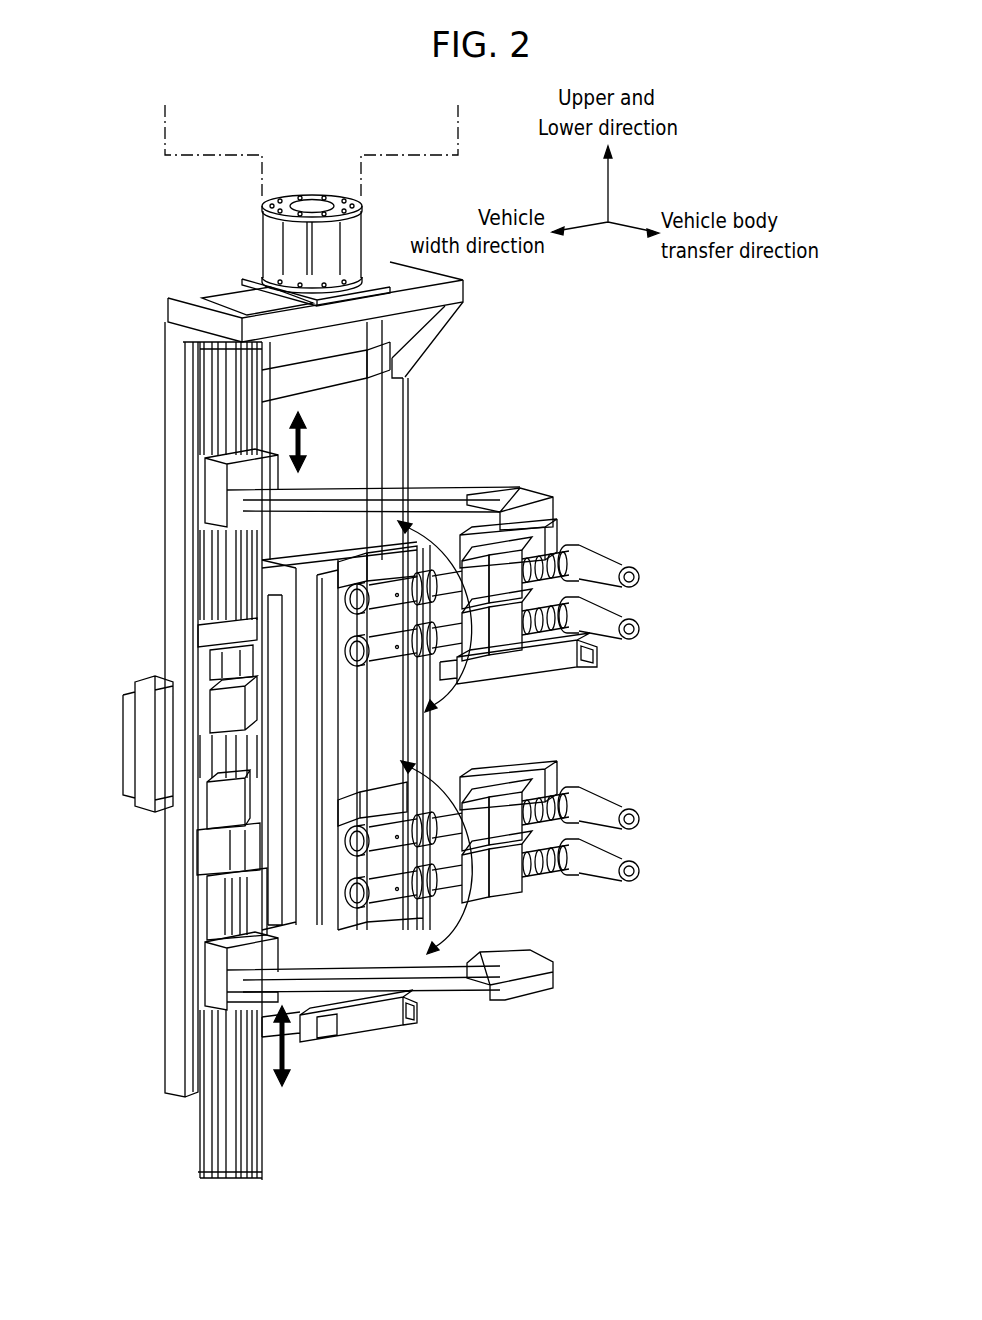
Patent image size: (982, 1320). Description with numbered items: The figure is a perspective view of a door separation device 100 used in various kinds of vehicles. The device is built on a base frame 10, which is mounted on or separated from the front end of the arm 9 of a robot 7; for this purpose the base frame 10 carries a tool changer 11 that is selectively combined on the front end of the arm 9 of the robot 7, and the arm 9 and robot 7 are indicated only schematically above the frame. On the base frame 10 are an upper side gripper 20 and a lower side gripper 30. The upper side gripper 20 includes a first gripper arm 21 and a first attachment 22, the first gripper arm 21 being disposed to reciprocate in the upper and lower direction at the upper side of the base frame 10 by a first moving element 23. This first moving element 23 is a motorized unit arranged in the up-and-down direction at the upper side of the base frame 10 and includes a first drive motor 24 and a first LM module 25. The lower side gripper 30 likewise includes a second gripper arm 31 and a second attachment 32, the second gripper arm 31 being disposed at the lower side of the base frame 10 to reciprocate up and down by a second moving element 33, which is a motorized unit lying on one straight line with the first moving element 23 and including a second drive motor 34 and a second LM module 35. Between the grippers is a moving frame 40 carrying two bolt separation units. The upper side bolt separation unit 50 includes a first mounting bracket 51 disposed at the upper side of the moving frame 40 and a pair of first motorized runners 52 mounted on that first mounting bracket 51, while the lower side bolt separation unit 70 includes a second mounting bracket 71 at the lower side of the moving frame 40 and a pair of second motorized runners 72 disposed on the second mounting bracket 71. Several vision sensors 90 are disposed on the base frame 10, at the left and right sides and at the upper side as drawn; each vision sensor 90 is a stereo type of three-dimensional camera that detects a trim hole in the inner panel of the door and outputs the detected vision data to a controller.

The door separation device 100 is at (116, 173).
The robot 7 is at (202, 170).
The arm 9 is at (368, 172).
The tool changer 11 is at (290, 224).
The base frame 10 is at (176, 504).
The first LM module 25 is at (232, 415).
The second LM module 35 is at (227, 1137).
The upper side gripper 20 is at (415, 458).
The first gripper arm 21 is at (433, 490).
The first attachment 22 is at (545, 516).
The first moving element 23 is at (168, 678).
The first drive motor 24 is at (212, 708).
The moving frame 40 is at (347, 785).
The upper side bolt separation unit 50 is at (519, 560).
The first mounting bracket 51 is at (548, 541).
The first motorized runner 52 is at (555, 540).
The lower side bolt separation unit 70 is at (496, 835).
The second mounting bracket 71 is at (545, 775).
The second motorized runner 72 is at (570, 882).
The vision sensor 90 is at (560, 671).
The second moving element 33 is at (180, 862).
The second drive motor 34 is at (210, 810).
The lower side gripper 30 is at (416, 1026).
The second gripper arm 31 is at (427, 975).
The second attachment 32 is at (547, 969).